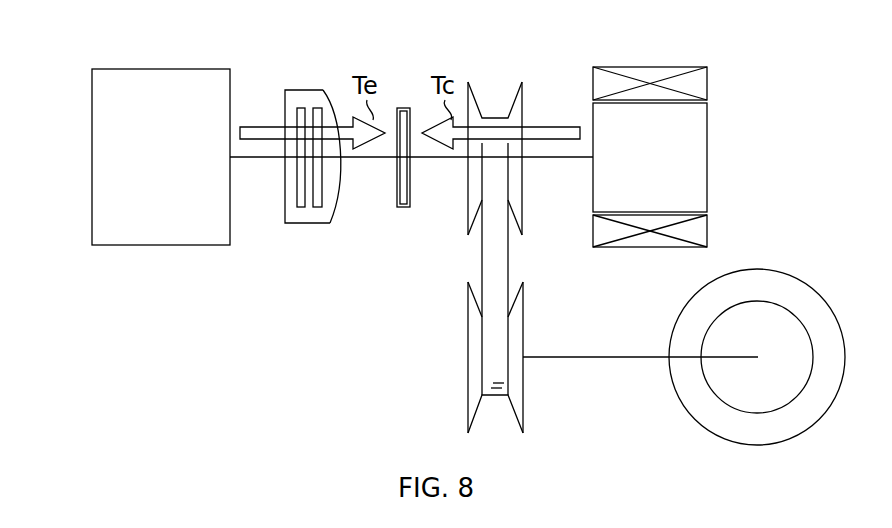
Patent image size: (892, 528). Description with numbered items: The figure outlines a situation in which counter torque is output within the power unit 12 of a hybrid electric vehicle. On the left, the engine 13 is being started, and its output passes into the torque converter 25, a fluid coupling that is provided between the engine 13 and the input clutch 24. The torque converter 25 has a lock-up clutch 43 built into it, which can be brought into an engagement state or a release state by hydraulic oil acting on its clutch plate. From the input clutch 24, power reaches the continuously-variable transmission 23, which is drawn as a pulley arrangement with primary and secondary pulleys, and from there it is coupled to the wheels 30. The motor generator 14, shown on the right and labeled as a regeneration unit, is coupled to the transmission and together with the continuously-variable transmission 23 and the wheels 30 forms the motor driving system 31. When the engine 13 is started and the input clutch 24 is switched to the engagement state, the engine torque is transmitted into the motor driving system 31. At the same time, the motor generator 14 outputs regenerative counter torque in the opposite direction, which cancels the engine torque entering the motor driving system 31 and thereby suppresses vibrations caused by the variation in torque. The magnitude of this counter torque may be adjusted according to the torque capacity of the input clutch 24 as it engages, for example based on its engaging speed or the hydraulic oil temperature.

The power unit 12 is at (210, 328).
The engine 13 is at (92, 124).
The motor generator 14 is at (707, 157).
The continuously-variable transmission 23 is at (462, 378).
The input clutch 24 is at (401, 207).
The torque converter 25 is at (305, 90).
The wheels 30 is at (777, 280).
The motor driving system 31 is at (758, 95).
The lock-up clutch 43 is at (305, 207).